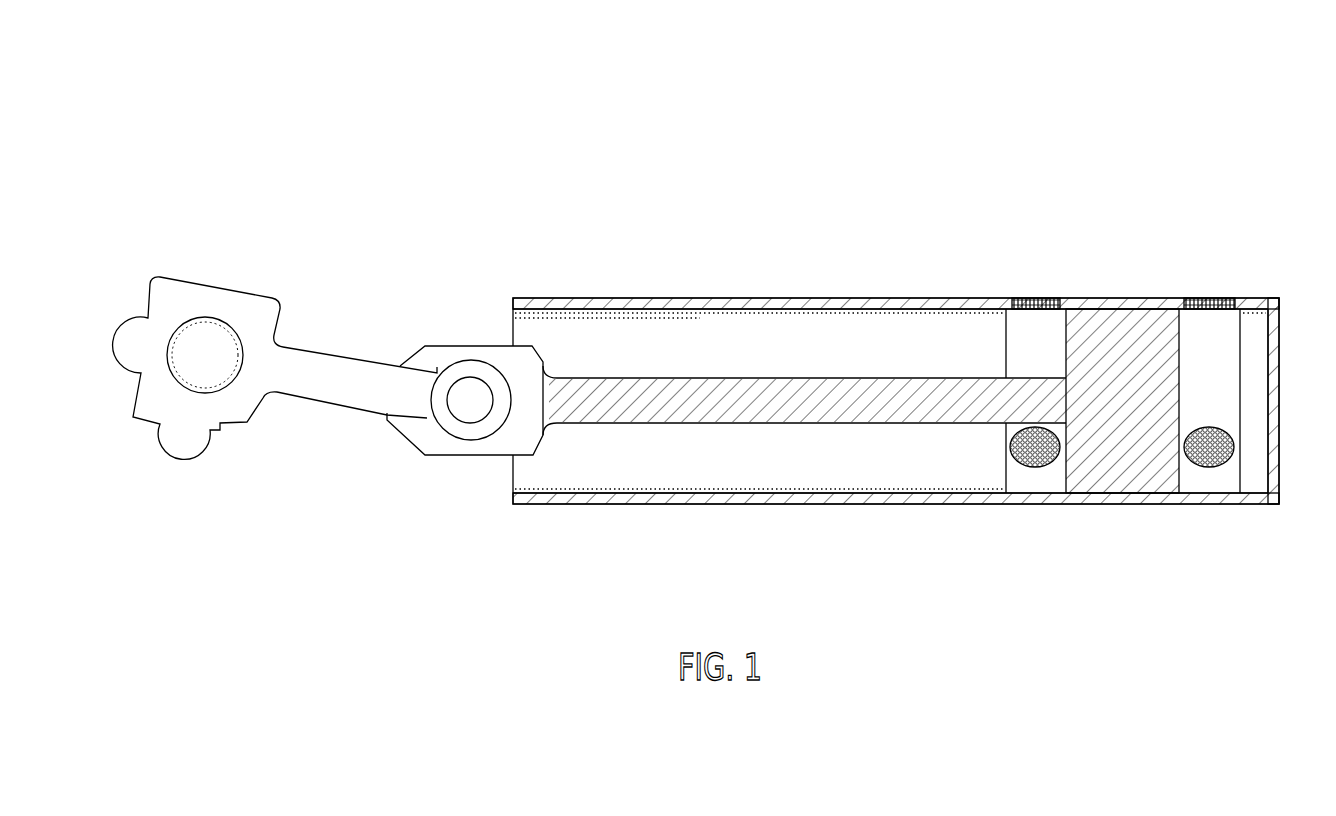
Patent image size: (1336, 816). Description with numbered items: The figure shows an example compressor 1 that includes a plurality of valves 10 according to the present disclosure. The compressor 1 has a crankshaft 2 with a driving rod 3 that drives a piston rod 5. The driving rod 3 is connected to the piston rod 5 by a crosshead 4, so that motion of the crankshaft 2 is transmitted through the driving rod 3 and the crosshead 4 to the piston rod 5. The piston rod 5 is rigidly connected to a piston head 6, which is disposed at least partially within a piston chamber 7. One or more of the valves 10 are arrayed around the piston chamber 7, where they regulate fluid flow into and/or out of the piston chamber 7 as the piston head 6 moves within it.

The compressor 1 is at (314, 121).
The crankshaft 2 is at (207, 348).
The driving rod 3 is at (338, 375).
The crosshead 4 is at (497, 442).
The piston rod 5 is at (673, 398).
The piston head 6 is at (1115, 324).
The piston chamber 7 is at (1223, 400).
The valve 10 is at (1037, 296).